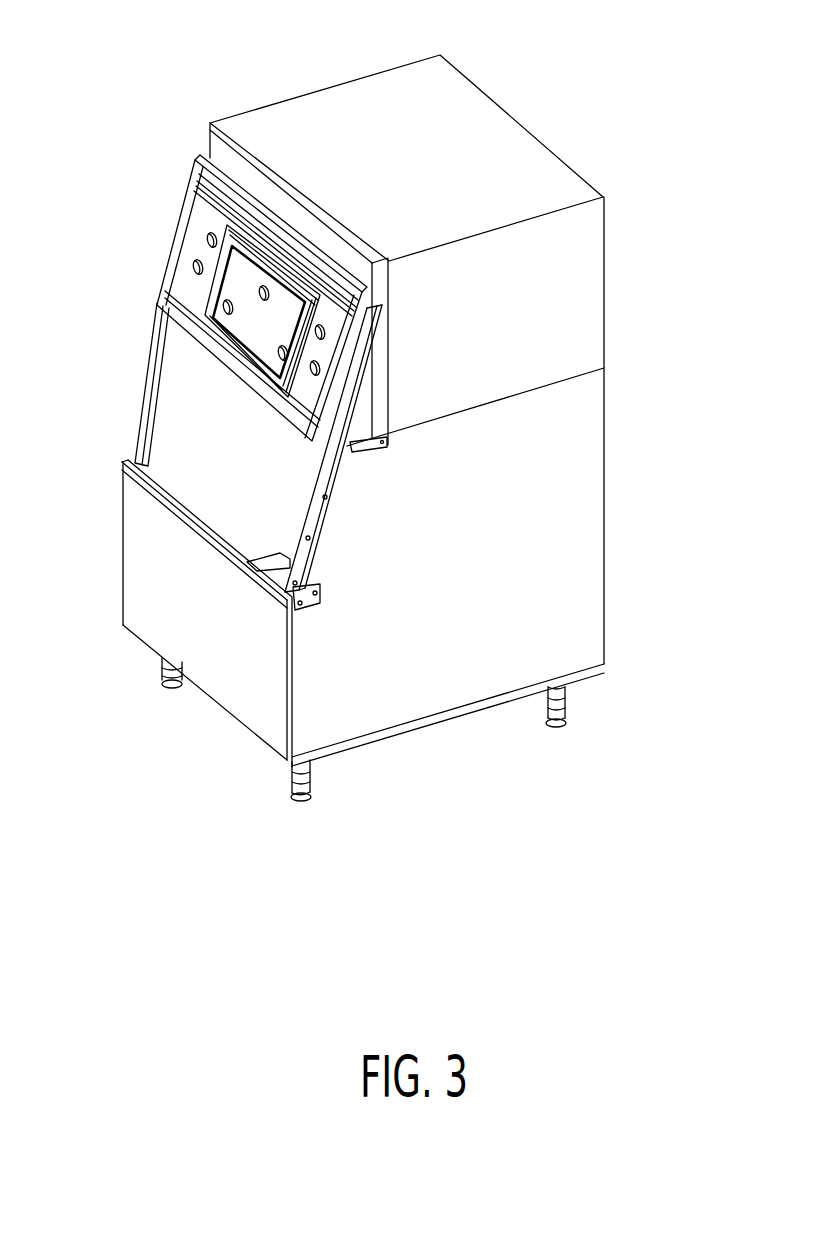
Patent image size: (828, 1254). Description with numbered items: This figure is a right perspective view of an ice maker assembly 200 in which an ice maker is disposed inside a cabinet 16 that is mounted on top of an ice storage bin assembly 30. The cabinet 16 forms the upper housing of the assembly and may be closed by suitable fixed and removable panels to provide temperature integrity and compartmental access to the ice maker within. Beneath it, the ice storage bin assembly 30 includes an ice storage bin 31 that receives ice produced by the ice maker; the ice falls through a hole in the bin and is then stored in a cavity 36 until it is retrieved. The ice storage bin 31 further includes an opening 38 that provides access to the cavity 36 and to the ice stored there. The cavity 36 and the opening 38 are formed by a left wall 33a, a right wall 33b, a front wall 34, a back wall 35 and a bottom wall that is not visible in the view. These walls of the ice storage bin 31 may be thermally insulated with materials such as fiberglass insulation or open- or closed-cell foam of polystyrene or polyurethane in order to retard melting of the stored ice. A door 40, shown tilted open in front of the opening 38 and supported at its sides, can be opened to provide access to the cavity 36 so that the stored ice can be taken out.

The ice maker assembly 200 is at (560, 92).
The cabinet 16 is at (580, 285).
The back wall 35 is at (607, 405).
The ice storage bin assembly 30 is at (593, 468).
The ice storage bin 31 is at (593, 602).
The right wall 33b is at (593, 648).
The front wall 34 is at (153, 618).
The opening 38 is at (166, 460).
The left wall 33a is at (150, 403).
The cavity 36 is at (195, 387).
The door 40 is at (195, 268).